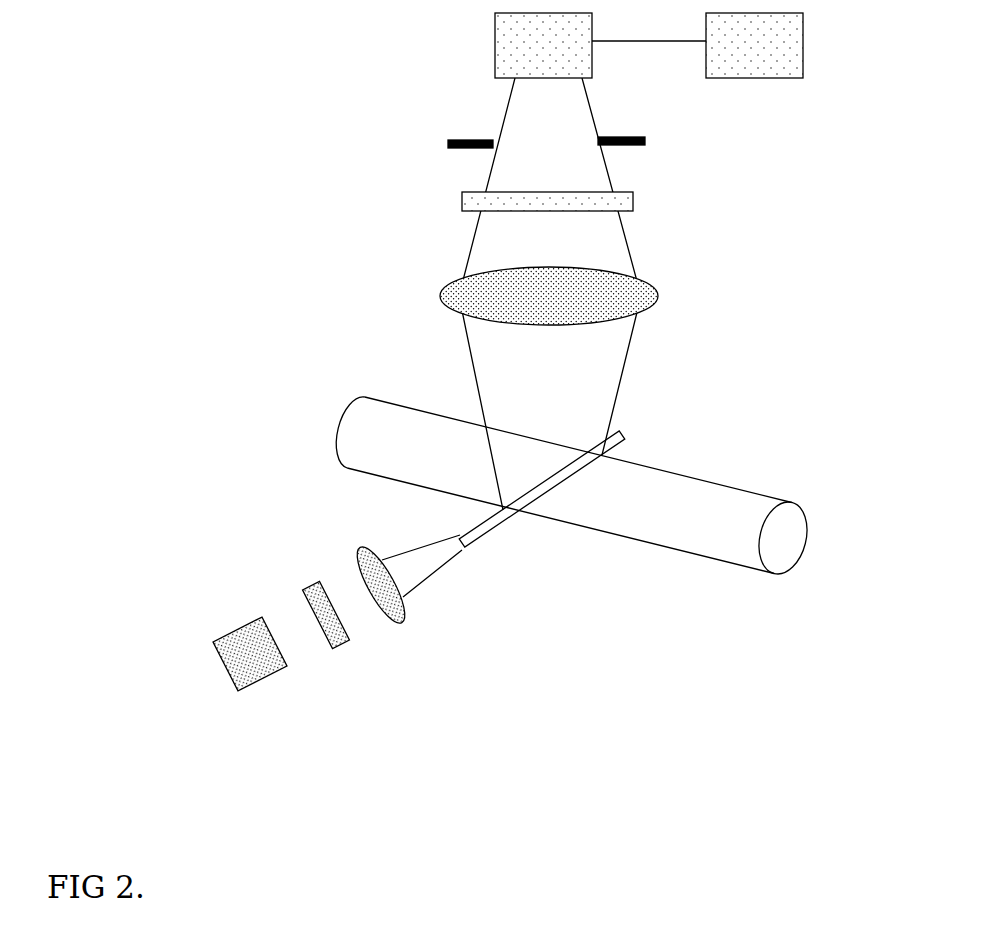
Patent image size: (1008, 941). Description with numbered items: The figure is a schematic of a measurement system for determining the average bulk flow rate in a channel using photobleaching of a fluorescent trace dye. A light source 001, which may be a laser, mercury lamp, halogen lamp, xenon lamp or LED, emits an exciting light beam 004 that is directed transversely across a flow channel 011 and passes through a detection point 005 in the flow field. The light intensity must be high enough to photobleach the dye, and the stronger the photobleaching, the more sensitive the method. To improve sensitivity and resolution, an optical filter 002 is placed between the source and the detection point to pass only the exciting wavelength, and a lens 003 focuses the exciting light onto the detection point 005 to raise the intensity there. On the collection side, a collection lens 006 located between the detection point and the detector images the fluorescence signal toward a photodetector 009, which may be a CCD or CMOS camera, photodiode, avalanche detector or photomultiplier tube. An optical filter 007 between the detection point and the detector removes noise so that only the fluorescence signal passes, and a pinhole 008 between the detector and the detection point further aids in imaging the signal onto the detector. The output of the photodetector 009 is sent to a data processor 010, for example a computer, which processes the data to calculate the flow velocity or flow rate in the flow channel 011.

The light source 001 is at (277, 683).
The optical filter 002 is at (353, 645).
The lens 003 is at (412, 608).
The exciting light beam 004 is at (447, 515).
The detection point 005 is at (563, 478).
The collection lens 006 is at (668, 295).
The optical filter 007 is at (445, 222).
The pinhole 008 is at (427, 145).
The photodetector 009 is at (485, 40).
The data processor 010 is at (753, 88).
The flow channel 011 is at (697, 463).